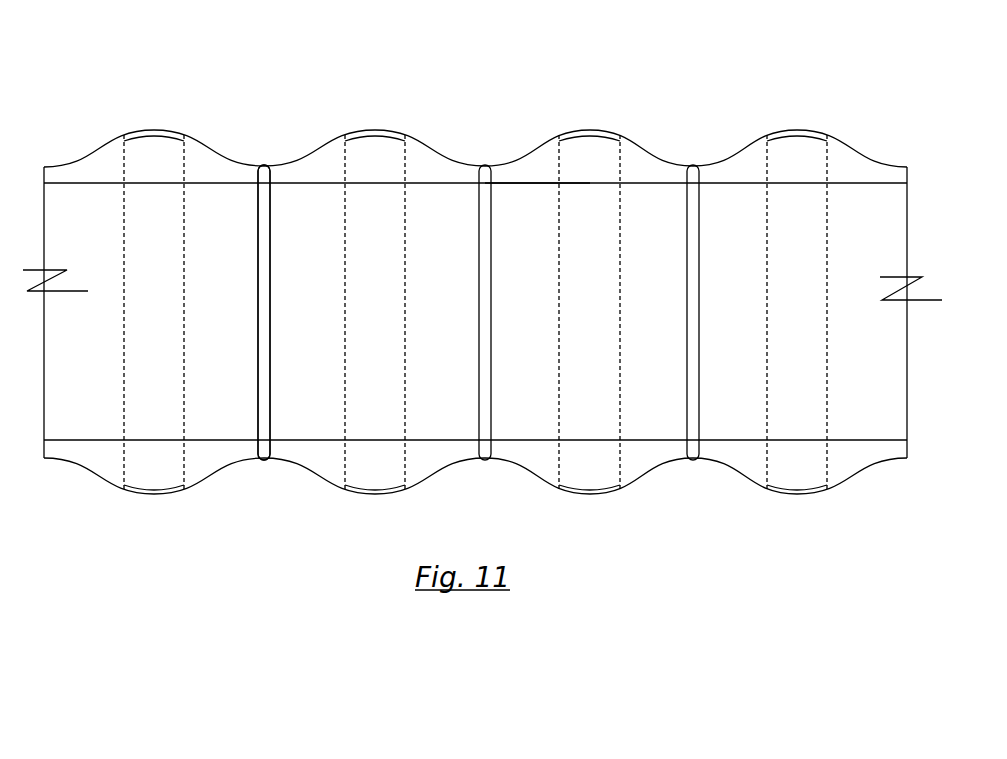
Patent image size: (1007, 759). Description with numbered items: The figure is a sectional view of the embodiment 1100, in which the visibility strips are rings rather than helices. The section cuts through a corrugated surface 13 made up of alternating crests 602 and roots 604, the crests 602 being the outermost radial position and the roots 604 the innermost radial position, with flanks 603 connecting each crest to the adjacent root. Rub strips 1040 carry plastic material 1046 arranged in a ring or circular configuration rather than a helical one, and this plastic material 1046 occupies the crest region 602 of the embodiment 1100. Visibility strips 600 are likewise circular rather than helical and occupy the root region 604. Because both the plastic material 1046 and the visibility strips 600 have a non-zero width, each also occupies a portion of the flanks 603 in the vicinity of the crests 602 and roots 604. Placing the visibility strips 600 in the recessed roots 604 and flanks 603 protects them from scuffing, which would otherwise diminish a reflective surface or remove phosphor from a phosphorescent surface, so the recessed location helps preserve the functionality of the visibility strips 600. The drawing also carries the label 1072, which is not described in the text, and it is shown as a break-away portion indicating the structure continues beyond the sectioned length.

The embodiment 1100 is at (281, 611).
The corrugated surface 13 is at (727, 589).
The top edge / sheet 1072 is at (446, 177).
The plastic material 1046 is at (148, 494).
The crest 602 is at (158, 126).
The rub strip 1040 is at (183, 386).
The root 604 is at (266, 162).
The visibility strip 600 is at (268, 460).
The flank 603 is at (586, 98).